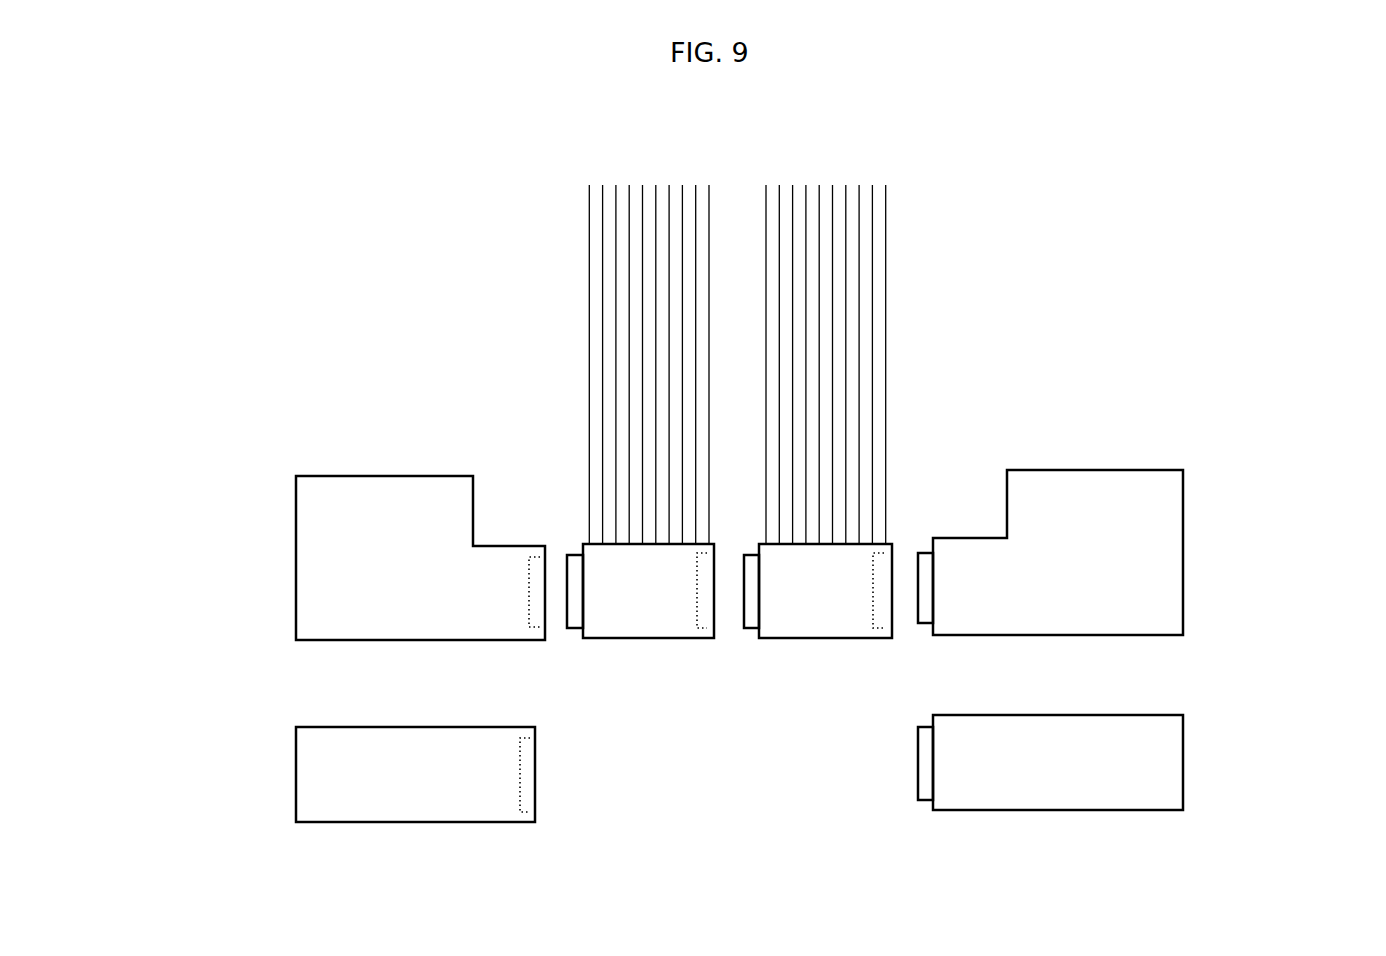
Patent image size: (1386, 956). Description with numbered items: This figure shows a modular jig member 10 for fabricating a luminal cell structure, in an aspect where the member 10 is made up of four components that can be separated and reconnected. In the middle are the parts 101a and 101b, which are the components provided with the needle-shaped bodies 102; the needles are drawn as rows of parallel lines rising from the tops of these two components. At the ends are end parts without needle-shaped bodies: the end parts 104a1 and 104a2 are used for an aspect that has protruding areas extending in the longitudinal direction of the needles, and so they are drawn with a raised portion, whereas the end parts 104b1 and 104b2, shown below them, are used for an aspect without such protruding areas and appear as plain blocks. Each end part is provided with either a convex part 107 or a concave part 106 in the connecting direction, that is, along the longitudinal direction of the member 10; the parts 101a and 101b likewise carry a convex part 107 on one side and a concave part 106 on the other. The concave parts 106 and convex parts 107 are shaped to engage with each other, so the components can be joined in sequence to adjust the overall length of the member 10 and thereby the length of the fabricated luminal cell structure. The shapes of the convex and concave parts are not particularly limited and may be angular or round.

The member 10 is at (1062, 237).
The needle-shaped bodies 102 is at (589, 292).
The part 101a is at (653, 639).
The part 101b is at (798, 639).
The end part 104a1 is at (296, 565).
The end part 104a2 is at (1183, 525).
The end part 104b1 is at (296, 782).
The end part 104b2 is at (1183, 767).
The concave part 106 is at (536, 629).
The convex part 107 is at (919, 625).